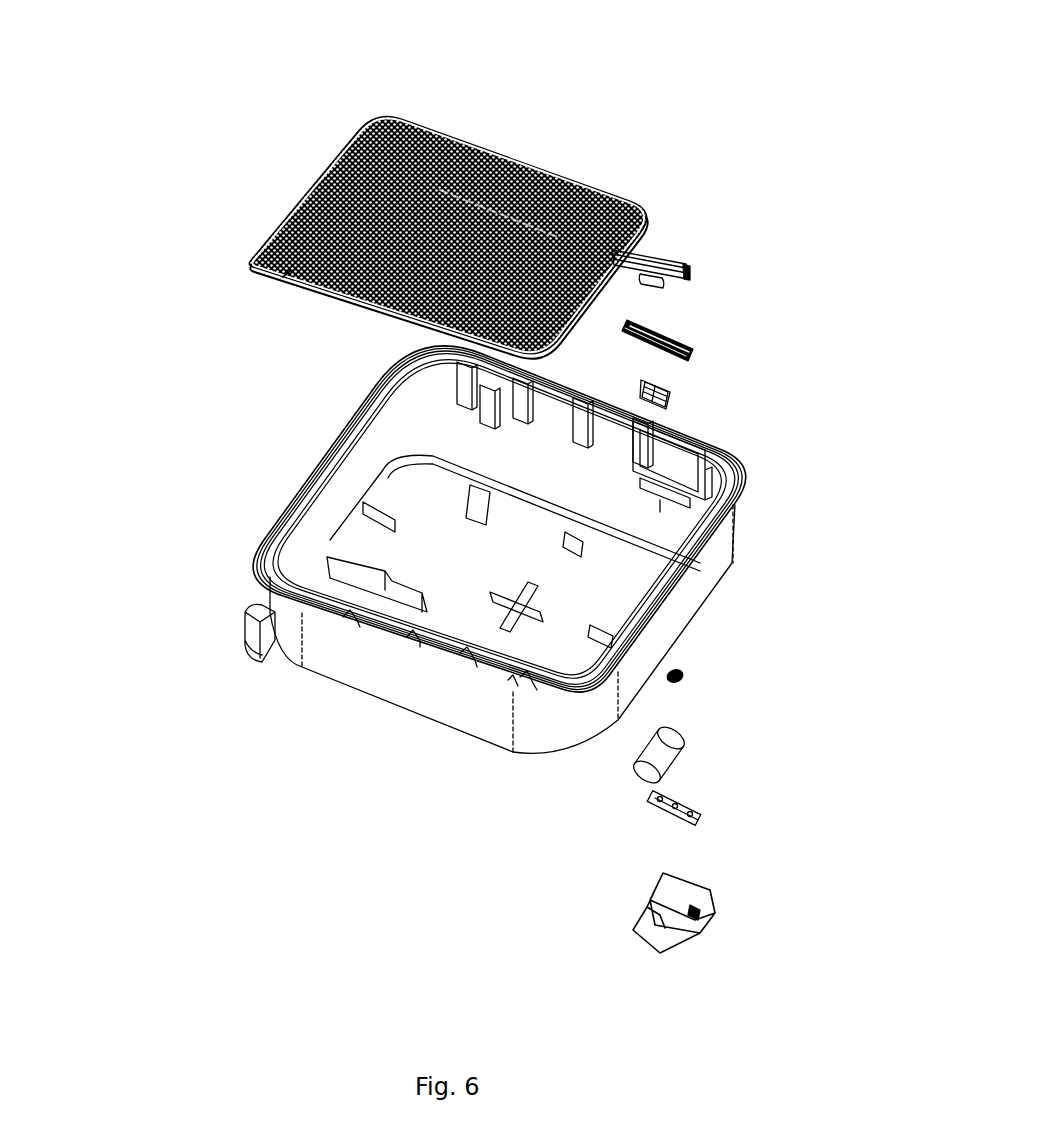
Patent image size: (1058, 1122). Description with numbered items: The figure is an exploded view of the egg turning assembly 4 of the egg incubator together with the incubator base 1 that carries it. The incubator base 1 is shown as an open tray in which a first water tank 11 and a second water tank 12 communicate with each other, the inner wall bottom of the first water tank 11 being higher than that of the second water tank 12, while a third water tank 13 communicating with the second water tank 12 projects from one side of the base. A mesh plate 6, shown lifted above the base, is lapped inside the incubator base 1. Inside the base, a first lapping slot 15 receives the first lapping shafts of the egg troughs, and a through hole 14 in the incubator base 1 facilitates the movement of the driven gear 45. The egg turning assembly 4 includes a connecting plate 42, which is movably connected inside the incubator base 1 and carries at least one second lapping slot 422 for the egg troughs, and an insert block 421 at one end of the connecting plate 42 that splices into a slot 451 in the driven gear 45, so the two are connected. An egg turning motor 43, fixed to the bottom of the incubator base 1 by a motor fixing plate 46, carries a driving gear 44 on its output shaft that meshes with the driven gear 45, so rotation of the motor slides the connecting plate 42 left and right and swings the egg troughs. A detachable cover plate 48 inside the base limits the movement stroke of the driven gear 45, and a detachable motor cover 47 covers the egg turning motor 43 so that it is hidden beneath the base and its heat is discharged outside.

The incubator base 1 is at (293, 507).
The first water tank 11 is at (447, 523).
The second water tank 12 is at (378, 610).
The third water tank 13 is at (230, 620).
The through hole 14 is at (697, 483).
The first lapping slot 15 is at (523, 693).
The egg turning assembly 4 is at (612, 795).
The connecting plate 42 is at (674, 145).
The insert block 421 is at (683, 270).
The second lapping slot 422 is at (680, 273).
The egg turning motor 43 is at (665, 753).
The driving gear 44 is at (686, 677).
The driven gear 45 is at (798, 431).
The slot 451 is at (672, 388).
The motor fixing plate 46 is at (700, 813).
The motor cover 47 is at (707, 913).
The cover plate 48 is at (697, 350).
The mesh plate 6 is at (307, 200).